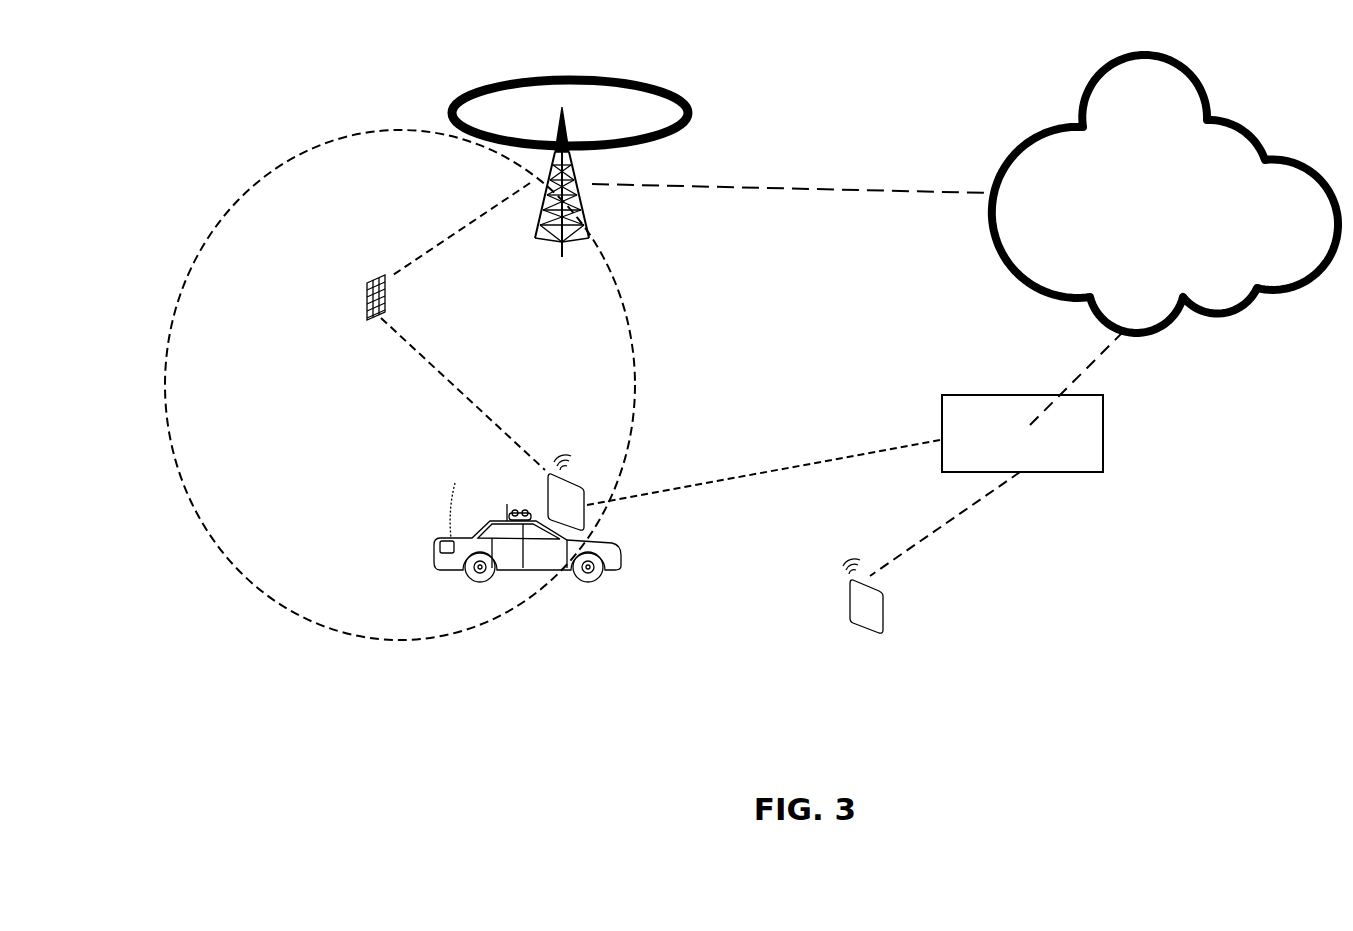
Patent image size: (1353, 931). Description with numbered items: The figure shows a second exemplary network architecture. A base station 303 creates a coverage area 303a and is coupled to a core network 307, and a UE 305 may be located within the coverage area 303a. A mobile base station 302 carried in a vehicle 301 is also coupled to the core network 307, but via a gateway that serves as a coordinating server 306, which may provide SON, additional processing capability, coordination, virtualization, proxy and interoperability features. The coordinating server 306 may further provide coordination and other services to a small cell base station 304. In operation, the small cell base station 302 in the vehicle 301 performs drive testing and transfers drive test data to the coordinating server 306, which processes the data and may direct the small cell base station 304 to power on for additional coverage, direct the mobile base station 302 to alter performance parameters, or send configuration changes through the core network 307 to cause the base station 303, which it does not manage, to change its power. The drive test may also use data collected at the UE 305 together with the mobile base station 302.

The vehicle 301 is at (487, 497).
The mobile base station 302 is at (577, 482).
The base station 303 is at (590, 200).
The coverage area 303a is at (200, 273).
The small cell base station 304 is at (887, 598).
The UE 305 is at (367, 277).
The coordinating server 306 is at (953, 393).
The core network 307 is at (1257, 303).